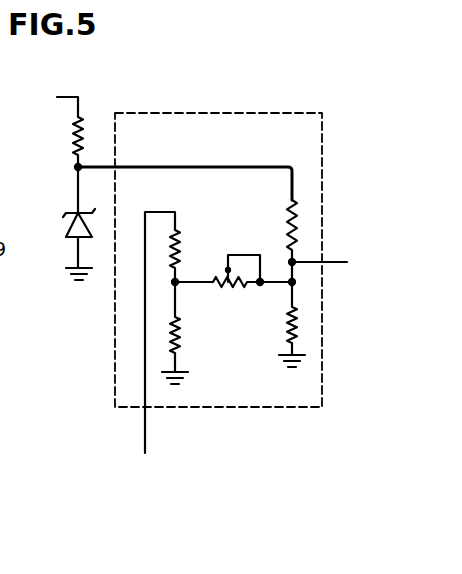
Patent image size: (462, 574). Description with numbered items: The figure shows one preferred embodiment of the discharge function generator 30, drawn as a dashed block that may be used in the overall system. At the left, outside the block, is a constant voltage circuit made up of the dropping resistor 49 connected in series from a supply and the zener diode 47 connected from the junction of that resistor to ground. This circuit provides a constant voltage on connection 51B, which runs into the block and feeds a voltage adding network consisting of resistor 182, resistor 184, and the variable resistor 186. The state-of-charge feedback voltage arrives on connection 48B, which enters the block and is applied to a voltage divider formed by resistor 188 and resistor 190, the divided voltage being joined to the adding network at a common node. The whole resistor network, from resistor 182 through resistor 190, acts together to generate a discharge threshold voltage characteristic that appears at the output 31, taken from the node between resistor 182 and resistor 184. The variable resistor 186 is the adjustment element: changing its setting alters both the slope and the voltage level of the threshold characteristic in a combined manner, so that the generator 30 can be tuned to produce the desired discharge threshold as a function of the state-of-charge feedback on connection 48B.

The discharge function generator 30 is at (198, 112).
The output 31 is at (333, 261).
The zener diode 47 is at (68, 212).
The connection 48B is at (146, 431).
The dropping resistor 49 is at (74, 150).
The connection 51B is at (102, 166).
The resistor 182 is at (288, 214).
The resistor 184 is at (290, 312).
The variable resistor 186 is at (228, 285).
The resistor 188 is at (177, 239).
The resistor 190 is at (178, 333).